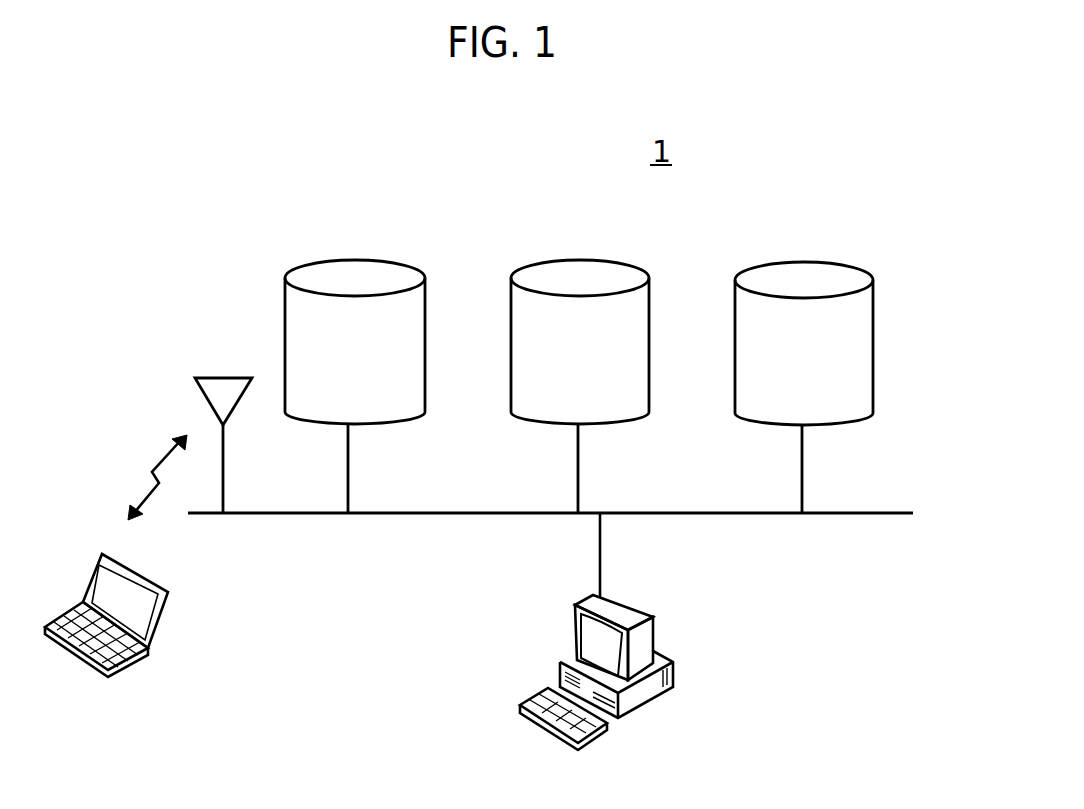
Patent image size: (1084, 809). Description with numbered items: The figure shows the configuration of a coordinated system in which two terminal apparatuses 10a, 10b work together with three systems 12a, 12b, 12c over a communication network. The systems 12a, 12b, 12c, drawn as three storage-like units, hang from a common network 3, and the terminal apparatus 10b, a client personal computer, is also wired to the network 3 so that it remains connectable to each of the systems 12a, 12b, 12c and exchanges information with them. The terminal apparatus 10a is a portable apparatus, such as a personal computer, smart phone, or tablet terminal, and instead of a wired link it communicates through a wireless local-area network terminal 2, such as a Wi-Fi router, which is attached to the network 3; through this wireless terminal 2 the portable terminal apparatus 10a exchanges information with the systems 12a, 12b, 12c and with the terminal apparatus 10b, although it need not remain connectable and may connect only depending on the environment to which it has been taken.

The wireless local-area network terminal 2 is at (210, 378).
The network 3 is at (905, 513).
The terminal apparatus 10a is at (168, 592).
The terminal apparatus 10b is at (652, 613).
The system 12a is at (375, 260).
The system 12b is at (607, 260).
The system 12c is at (830, 263).